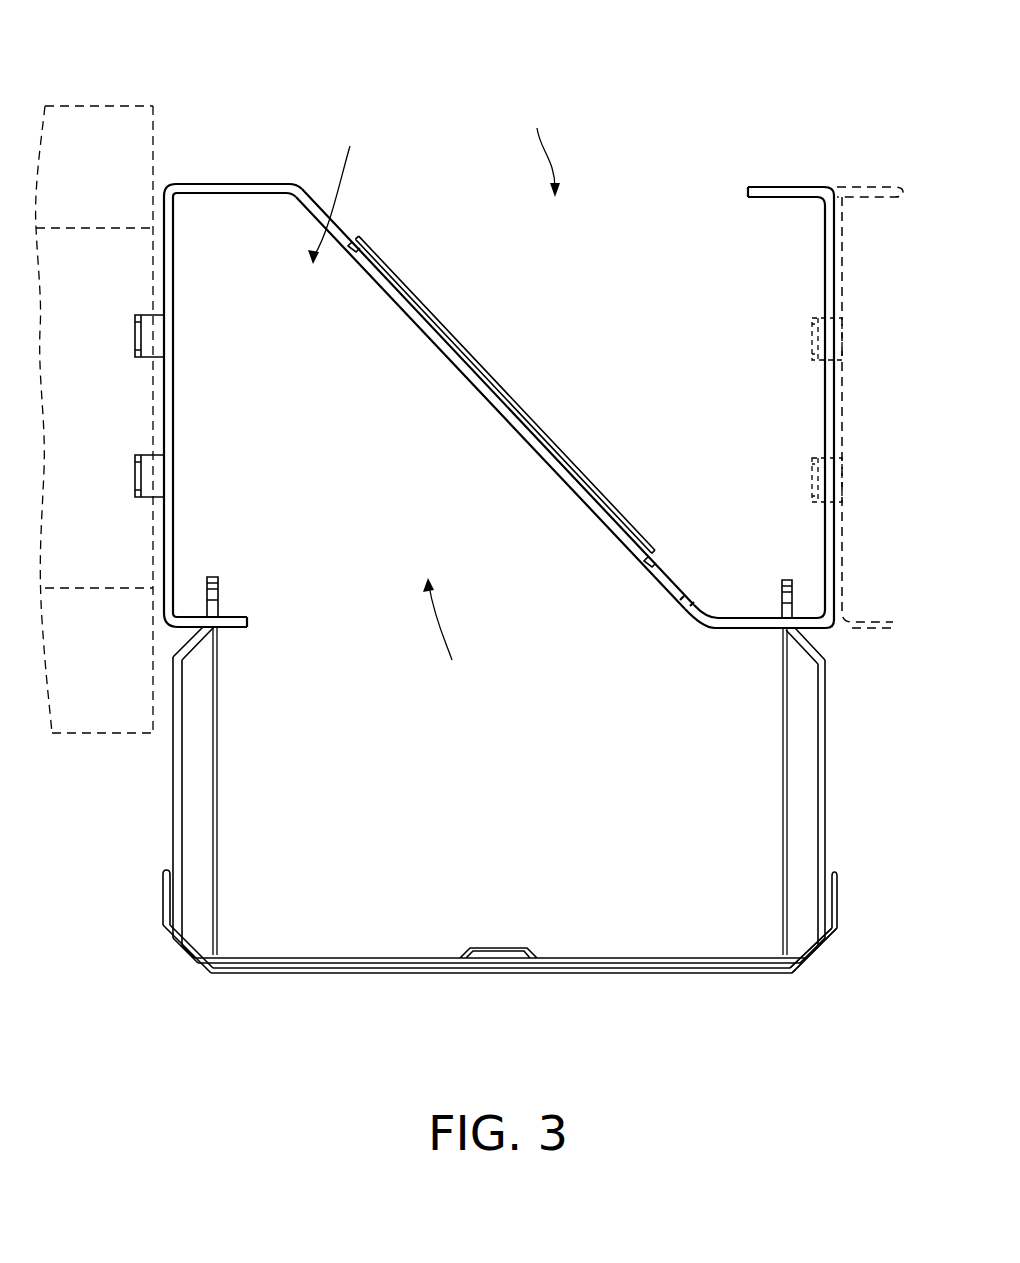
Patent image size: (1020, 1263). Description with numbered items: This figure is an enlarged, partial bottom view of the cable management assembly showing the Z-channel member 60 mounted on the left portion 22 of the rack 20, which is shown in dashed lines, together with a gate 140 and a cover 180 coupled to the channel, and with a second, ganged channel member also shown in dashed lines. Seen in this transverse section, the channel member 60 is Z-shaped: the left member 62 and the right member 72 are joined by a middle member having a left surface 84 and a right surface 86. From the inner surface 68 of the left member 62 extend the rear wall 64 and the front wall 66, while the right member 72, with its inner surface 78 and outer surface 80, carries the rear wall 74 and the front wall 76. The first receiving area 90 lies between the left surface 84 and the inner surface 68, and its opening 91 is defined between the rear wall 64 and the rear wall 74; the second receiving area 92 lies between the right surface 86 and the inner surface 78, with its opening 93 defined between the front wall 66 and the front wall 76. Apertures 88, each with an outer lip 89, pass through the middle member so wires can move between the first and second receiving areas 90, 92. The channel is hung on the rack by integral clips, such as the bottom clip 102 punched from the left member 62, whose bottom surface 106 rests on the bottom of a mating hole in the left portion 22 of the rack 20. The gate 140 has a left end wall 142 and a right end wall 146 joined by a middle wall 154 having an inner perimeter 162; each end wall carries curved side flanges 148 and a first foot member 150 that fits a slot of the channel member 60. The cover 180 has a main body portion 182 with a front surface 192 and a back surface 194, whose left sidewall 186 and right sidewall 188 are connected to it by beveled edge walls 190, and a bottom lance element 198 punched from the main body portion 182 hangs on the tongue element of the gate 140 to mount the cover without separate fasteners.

The rack 20 is at (155, 142).
The left portion 22 is at (100, 100).
The Z-channel member 60 is at (838, 234).
The left member 62 is at (175, 262).
The rear wall 64 is at (240, 628).
The front wall 66 is at (232, 184).
The inner surface 68 is at (175, 405).
The right member 72 is at (842, 335).
The rear wall 74 is at (778, 187).
The front wall 76 is at (722, 630).
The inner surface 78 is at (825, 246).
The outer surface 80 is at (842, 405).
The left surface 84 is at (470, 378).
The right surface 86 is at (690, 606).
The aperture 88 is at (486, 372).
The outer lip 89 is at (362, 232).
The first receiving area 90 is at (339, 191).
The opening 91 is at (448, 631).
The second receiving area 92 is at (680, 600).
The opening 93 is at (539, 148).
The bottom integral clip 102 is at (160, 330).
The bottom surface 106 is at (150, 345).
The gate 140 is at (830, 760).
The left end wall 142 is at (215, 775).
The right end wall 146 is at (782, 740).
The side flange 148 is at (205, 822).
The first foot member 150 is at (220, 588).
The middle wall 154 is at (330, 957).
The inner perimeter 162 is at (590, 957).
The cover 180 is at (786, 975).
The main body portion 182 is at (435, 973).
The left sidewall 186 is at (162, 890).
The right sidewall 188 is at (838, 900).
The beveled edge wall 190 is at (183, 955).
The front surface 192 is at (540, 975).
The back surface 194 is at (176, 885).
The bottom lance element 198 is at (490, 947).